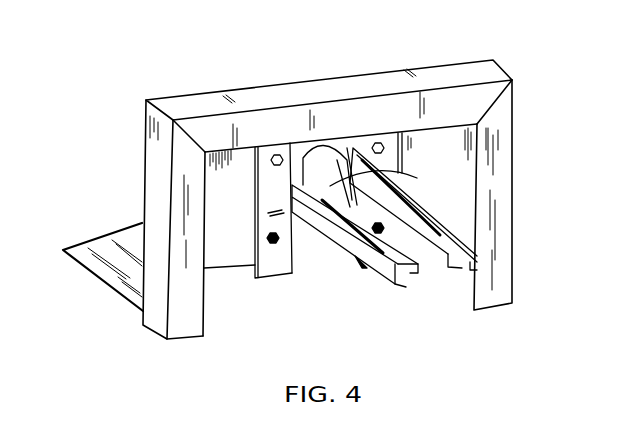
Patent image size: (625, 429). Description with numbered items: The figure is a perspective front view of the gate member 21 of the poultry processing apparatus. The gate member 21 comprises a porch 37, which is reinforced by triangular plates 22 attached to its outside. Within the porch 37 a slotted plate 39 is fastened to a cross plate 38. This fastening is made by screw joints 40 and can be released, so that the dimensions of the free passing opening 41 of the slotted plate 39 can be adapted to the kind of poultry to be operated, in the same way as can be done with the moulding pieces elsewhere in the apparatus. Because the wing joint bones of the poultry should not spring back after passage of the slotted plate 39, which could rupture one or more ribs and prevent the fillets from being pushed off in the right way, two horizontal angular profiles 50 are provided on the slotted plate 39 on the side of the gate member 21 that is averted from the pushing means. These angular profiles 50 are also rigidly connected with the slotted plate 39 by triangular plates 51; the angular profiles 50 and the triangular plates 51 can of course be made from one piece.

The gate member 21 is at (132, 86).
The triangular plates 22 is at (104, 247).
The porch 37 is at (491, 64).
The cross plate 38 is at (230, 252).
The slotted plate 39 is at (277, 267).
The screw joints 40 is at (267, 235).
The free passing opening 41 is at (306, 263).
The horizontal angular profiles 50 is at (462, 255).
The triangular plates 51 is at (388, 193).